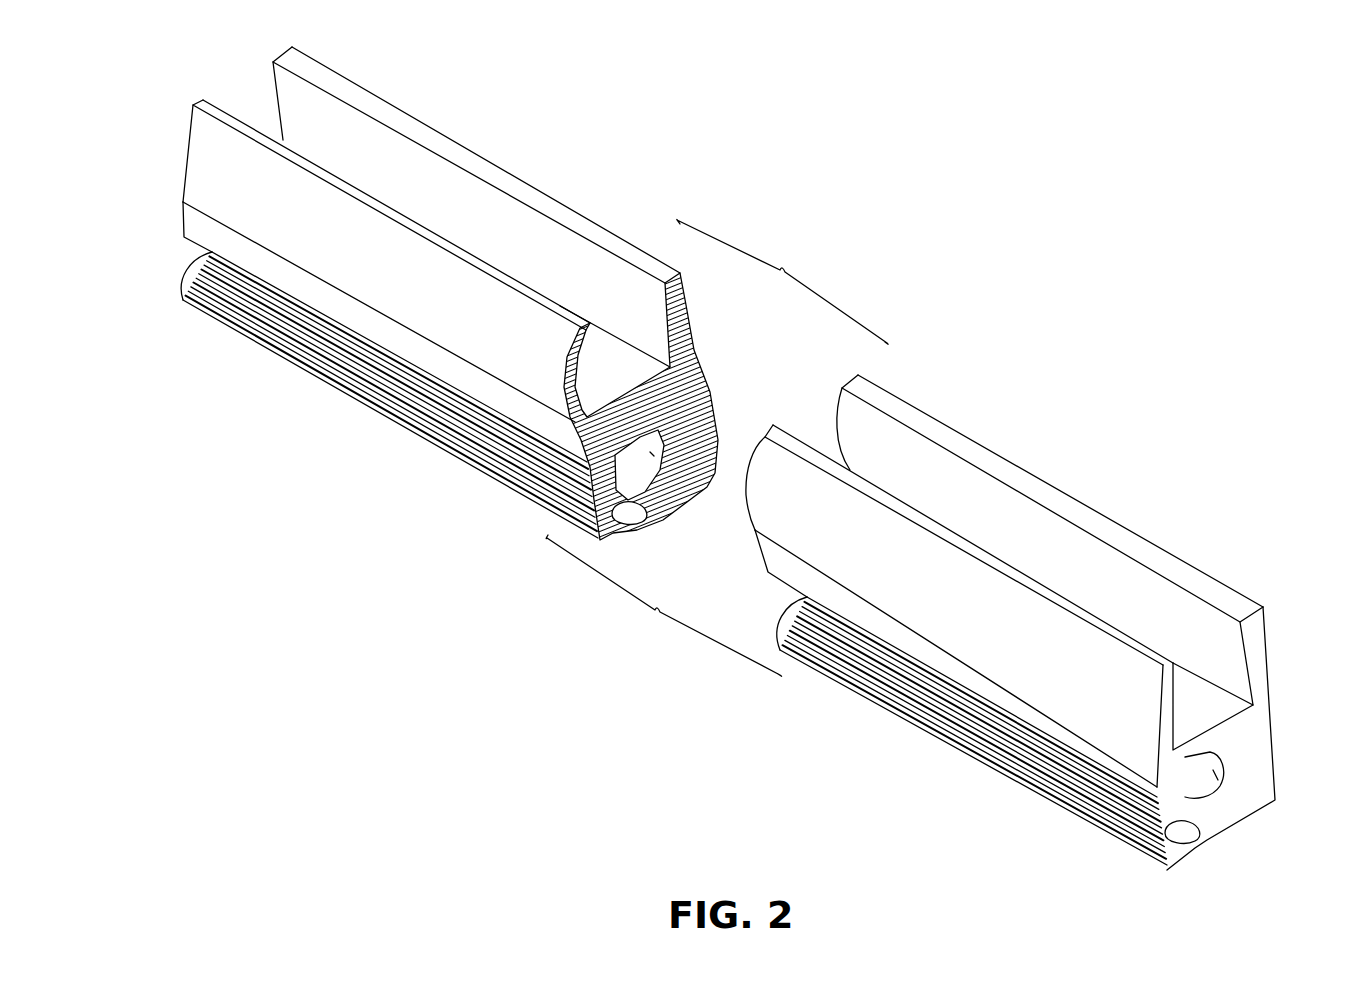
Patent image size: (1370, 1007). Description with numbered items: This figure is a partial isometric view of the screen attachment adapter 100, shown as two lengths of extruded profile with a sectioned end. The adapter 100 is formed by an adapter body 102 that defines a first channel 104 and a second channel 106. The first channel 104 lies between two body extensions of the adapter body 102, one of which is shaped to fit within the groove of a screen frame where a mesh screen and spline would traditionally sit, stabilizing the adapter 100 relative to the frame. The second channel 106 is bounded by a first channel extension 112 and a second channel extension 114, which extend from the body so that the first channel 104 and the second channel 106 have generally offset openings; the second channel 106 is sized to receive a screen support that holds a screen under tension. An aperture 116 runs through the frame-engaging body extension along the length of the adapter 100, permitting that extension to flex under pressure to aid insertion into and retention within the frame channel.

The adapter 100 is at (1135, 222).
The adapter body 102 is at (677, 307).
The first channel 104 is at (183, 251).
The second channel 106 is at (239, 82).
The first channel extension 112 is at (203, 100).
The second channel extension 114 is at (530, 197).
The aperture 116 is at (1192, 852).